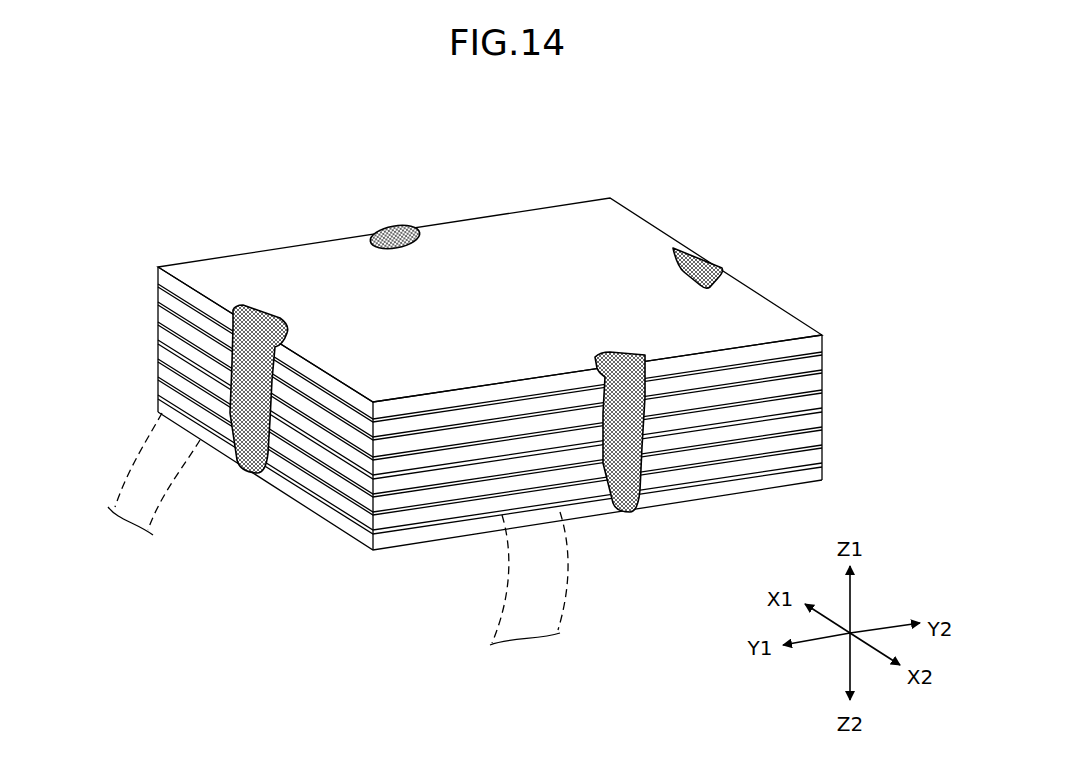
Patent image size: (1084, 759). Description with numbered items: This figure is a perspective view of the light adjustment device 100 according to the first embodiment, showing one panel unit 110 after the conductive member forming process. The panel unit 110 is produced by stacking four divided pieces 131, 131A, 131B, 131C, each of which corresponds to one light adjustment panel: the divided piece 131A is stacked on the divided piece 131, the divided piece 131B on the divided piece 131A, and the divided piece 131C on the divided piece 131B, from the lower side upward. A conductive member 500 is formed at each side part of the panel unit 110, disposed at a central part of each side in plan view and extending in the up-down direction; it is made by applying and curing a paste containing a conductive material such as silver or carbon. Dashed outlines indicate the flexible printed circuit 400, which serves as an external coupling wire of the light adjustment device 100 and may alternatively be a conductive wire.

The light adjustment device 100 is at (628, 162).
The panel unit 110 is at (290, 292).
The divided piece 131 is at (828, 448).
The divided piece 131A is at (828, 412).
The divided piece 131B is at (828, 373).
The divided piece 131C is at (828, 335).
The flexible printed circuit 400 is at (140, 478).
The conductive member 500 is at (396, 229).